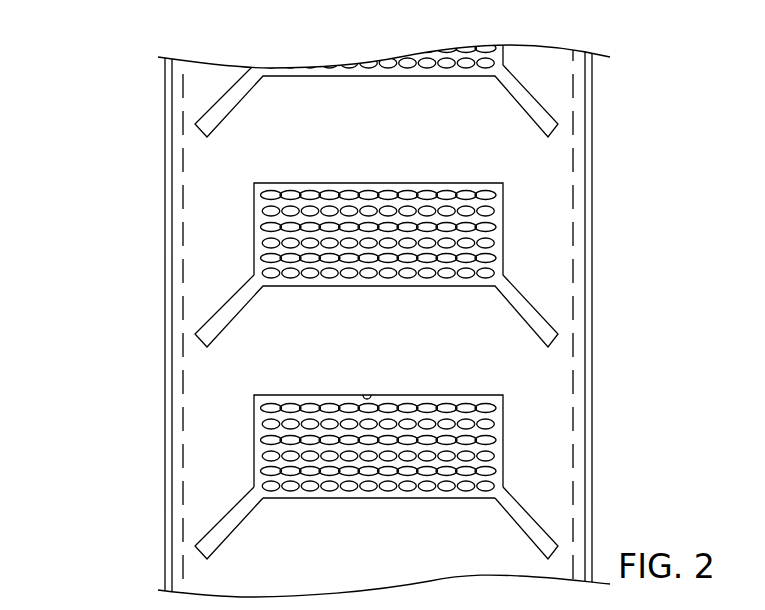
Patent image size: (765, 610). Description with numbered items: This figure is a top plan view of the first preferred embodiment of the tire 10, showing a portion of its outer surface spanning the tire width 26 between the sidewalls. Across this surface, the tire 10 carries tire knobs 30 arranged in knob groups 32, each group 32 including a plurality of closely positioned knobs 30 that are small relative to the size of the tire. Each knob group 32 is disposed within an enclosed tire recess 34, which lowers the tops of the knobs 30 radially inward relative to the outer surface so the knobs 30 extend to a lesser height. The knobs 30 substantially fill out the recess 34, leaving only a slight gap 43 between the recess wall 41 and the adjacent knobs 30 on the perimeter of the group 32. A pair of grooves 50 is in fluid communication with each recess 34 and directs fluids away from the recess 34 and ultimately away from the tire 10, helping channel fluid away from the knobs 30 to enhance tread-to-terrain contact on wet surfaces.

The tire 10 is at (100, 159).
The tire width 26 is at (590, 46).
The tire knobs 30 is at (492, 486).
The knob groups 32 is at (422, 361).
The tire recess 34 is at (503, 412).
The recess wall 41 is at (371, 393).
The gap 43 is at (480, 183).
The grooves 50 is at (240, 520).